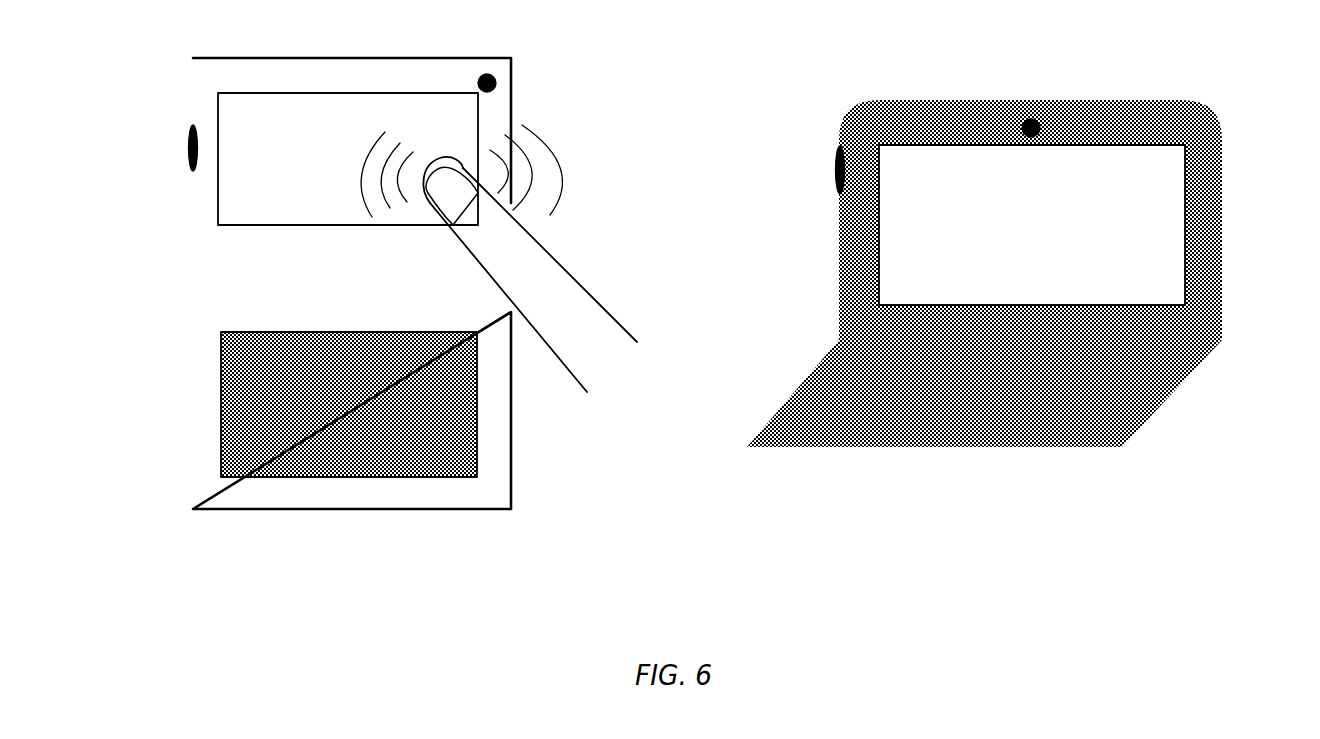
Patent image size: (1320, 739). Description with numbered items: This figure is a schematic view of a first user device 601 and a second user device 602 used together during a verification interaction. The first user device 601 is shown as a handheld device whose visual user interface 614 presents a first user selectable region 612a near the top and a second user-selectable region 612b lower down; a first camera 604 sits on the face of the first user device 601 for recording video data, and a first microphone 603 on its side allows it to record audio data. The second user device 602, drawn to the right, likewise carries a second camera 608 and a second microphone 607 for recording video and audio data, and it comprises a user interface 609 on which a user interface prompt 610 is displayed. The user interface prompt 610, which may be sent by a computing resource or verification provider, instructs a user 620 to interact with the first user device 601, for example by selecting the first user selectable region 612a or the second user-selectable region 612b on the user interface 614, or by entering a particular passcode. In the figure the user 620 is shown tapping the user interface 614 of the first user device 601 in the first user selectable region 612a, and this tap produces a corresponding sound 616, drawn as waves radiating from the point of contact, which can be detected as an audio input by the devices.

The first user device 601 is at (237, 512).
The second user device 602 is at (760, 443).
The first microphone 603 is at (188, 152).
The first camera 604 is at (496, 83).
The second microphone 607 is at (840, 165).
The second camera 608 is at (1031, 122).
The user interface 609 is at (1160, 205).
The user interface prompt 610 is at (1115, 252).
The first user selectable region 612a is at (217, 108).
The second user-selectable region 612b is at (221, 410).
The user interface 614 is at (215, 290).
The sound 616 is at (537, 135).
The user 620 is at (573, 267).